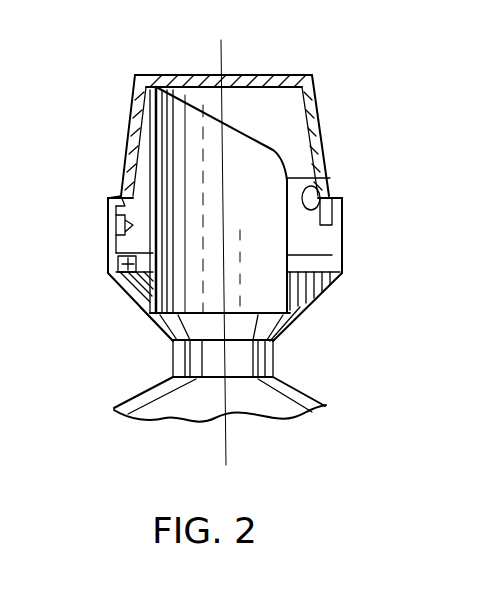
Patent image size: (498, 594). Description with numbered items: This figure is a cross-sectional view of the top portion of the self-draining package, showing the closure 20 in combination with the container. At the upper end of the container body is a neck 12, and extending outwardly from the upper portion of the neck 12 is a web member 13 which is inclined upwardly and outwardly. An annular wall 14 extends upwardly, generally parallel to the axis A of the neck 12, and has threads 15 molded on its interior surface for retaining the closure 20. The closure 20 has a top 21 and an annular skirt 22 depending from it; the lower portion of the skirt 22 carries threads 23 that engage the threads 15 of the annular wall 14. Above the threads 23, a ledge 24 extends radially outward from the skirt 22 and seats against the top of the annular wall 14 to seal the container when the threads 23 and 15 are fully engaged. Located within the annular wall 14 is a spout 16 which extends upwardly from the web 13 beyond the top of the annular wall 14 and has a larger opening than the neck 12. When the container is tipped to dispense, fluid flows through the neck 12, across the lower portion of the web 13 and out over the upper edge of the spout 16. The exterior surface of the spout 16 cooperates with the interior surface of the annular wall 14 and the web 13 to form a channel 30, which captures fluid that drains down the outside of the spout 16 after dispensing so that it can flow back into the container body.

The axis of the neck A is at (222, 56).
The neck 12 is at (275, 351).
The web member 13 is at (316, 304).
The annular wall 14 is at (343, 232).
The threads 15 is at (330, 178).
The spout 16 is at (150, 90).
The closure 20 is at (318, 70).
The top 21 is at (180, 73).
The annular skirt 22 is at (150, 150).
The threads 23 is at (107, 215).
The ledge 24 is at (118, 196).
The channel 30 is at (118, 262).